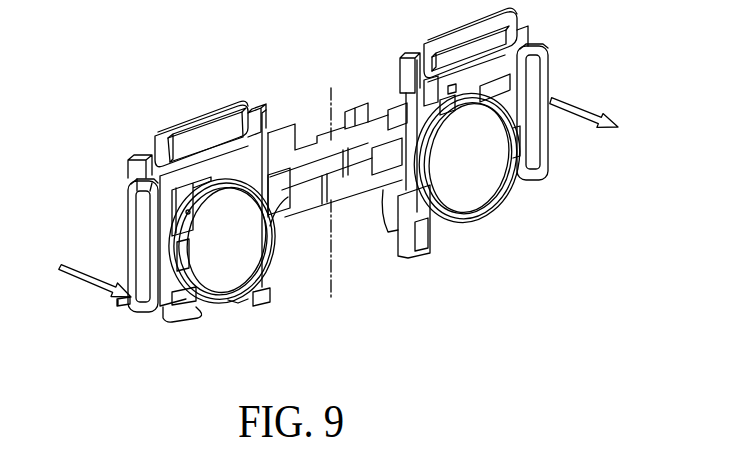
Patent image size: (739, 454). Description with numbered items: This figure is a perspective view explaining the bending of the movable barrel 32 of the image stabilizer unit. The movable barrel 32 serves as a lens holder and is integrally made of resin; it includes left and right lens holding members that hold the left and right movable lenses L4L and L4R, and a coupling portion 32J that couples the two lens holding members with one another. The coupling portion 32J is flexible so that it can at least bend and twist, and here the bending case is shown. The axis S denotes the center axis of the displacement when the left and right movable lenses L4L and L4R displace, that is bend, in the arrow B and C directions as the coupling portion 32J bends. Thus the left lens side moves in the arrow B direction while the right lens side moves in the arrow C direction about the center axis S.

The movable barrel 32 is at (380, 92).
The coupling portion 32J is at (323, 132).
The left movable lens L4L is at (243, 262).
The right movable lens L4R is at (466, 183).
The center axis of displacement S is at (337, 273).
The arrow B direction B is at (95, 288).
The arrow C direction C is at (584, 100).